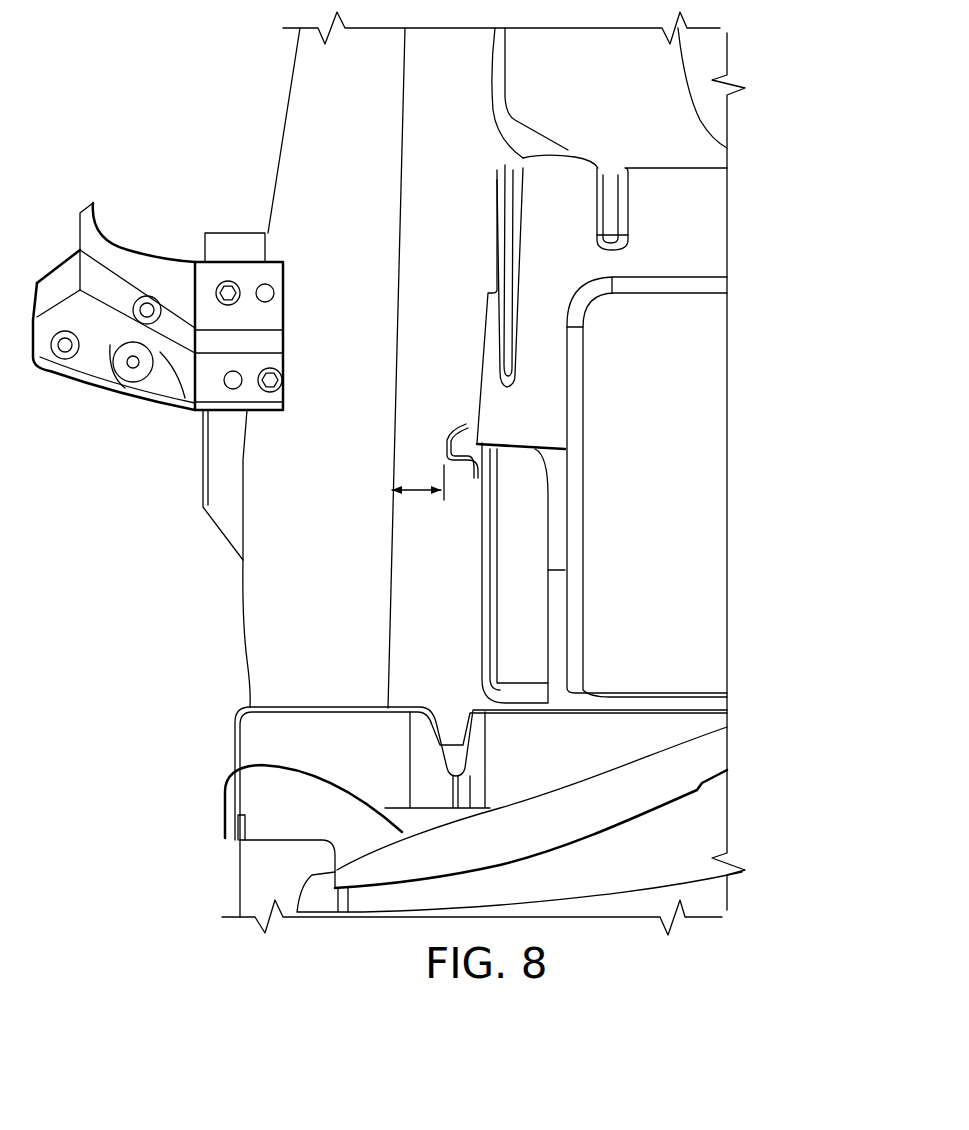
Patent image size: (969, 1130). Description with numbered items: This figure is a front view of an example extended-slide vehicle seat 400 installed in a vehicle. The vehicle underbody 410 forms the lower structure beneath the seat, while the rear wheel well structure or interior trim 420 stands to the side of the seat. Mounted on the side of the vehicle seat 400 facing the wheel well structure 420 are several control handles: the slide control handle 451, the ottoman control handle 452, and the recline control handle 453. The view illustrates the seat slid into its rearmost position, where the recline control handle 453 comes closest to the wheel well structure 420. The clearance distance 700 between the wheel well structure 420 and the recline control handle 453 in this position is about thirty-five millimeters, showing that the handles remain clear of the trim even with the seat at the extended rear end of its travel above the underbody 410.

The extended-slide vehicle seat 400 is at (753, 203).
The vehicle underbody 410 is at (250, 875).
The rear wheel well structure or interior trim 420 is at (268, 574).
The slide control handle 451 is at (480, 583).
The ottoman control handle 452 is at (487, 330).
The recline control handle 453 is at (462, 428).
The clearance distance 700 is at (418, 492).